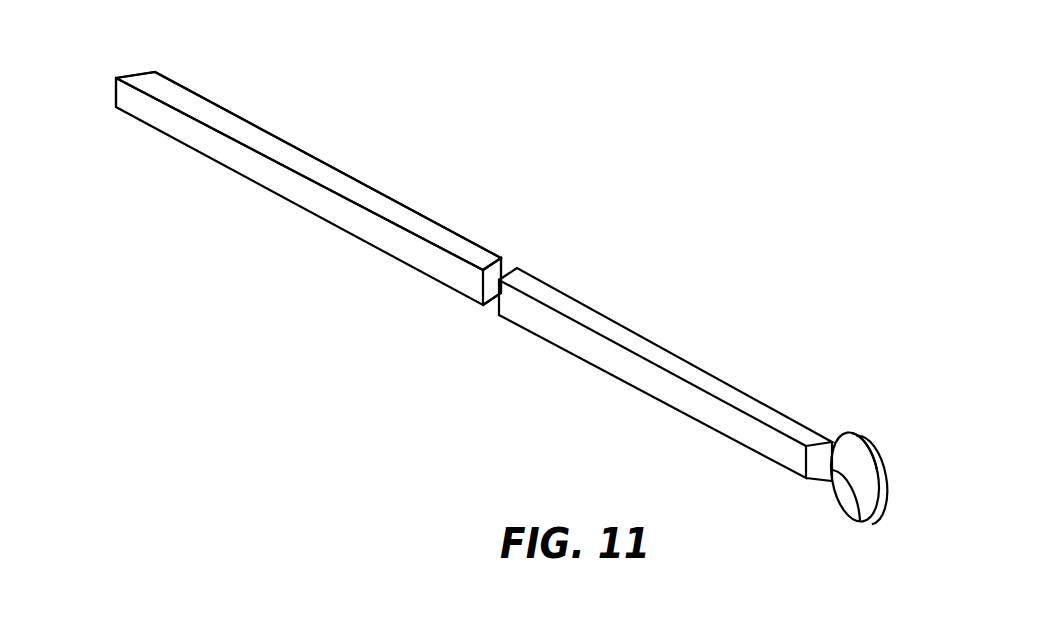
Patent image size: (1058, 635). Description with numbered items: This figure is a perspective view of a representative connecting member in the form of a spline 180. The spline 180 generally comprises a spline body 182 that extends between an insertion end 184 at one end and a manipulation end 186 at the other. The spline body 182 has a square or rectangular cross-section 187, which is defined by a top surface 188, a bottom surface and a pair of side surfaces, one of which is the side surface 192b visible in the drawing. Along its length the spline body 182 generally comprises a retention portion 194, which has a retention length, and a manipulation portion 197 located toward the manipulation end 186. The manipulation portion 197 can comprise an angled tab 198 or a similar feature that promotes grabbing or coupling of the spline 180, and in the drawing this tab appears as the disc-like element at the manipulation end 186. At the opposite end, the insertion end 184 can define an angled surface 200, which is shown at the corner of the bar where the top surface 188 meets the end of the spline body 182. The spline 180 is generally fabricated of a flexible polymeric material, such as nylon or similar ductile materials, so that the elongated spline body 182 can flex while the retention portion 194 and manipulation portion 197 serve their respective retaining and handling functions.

The spline 180 is at (538, 197).
The spline body 182 is at (217, 162).
The insertion end 184 is at (116, 92).
The manipulation end 186 is at (888, 498).
The square or rectangular cross-section 187 is at (475, 288).
The top surface 188 is at (573, 335).
The side surface 192b is at (300, 160).
The retention portion 194 is at (217, 103).
The manipulation portion 197 is at (857, 442).
The angled tab 198 is at (850, 495).
The angled surface 200 is at (133, 73).